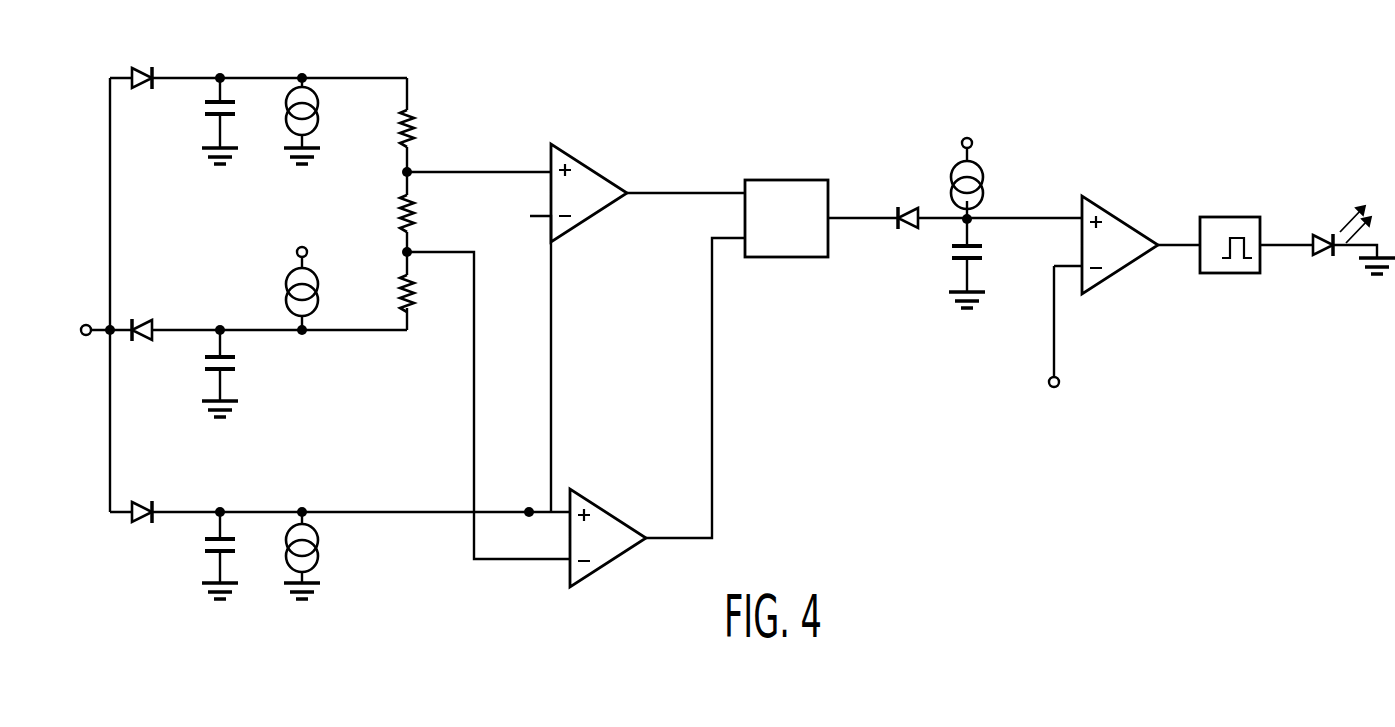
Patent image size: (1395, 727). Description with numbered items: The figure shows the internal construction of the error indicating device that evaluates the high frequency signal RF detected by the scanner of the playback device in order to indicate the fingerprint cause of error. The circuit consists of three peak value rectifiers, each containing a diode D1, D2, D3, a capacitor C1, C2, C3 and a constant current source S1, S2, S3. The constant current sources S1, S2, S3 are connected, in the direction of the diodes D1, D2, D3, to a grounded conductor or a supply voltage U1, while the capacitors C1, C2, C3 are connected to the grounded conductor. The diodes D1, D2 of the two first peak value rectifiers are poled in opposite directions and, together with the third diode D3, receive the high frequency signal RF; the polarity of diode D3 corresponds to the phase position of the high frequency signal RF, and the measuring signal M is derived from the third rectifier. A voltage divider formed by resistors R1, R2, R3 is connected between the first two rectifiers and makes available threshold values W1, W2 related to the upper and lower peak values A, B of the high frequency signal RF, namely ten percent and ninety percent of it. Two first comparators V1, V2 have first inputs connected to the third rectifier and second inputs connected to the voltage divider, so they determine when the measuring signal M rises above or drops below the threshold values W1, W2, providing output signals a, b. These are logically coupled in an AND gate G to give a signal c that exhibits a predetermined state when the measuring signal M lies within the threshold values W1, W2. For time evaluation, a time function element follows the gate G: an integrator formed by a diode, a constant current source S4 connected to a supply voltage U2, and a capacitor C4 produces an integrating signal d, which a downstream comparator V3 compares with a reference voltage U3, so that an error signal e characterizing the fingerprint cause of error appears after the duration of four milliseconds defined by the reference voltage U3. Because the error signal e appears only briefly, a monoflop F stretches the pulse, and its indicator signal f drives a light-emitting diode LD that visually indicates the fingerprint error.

The high frequency signal RF is at (70, 331).
The diode D1 is at (141, 62).
The diode D2 is at (524, 259).
The diode D3 is at (141, 496).
The capacitor C1 is at (205, 121).
The capacitor C2 is at (205, 373).
The capacitor C3 is at (205, 555).
The capacitor C4 is at (980, 263).
The constant current source S1 is at (315, 121).
The constant current source S2 is at (314, 293).
The constant current source S3 is at (313, 555).
The constant current source S4 is at (980, 190).
The resistor R1 is at (421, 128).
The resistor R2 is at (421, 213).
The resistor R3 is at (424, 292).
The supply voltage U1 is at (298, 236).
The supply voltage U2 is at (966, 135).
The reference voltage U3 is at (1053, 401).
The first comparator V1 is at (584, 158).
The first comparator V2 is at (608, 534).
The comparator V3 is at (1115, 212).
The AND gate G is at (778, 178).
The monoflop F is at (1222, 216).
The light-emitting diode LD is at (1354, 249).
The upper peak value A is at (420, 74).
The lower peak value B is at (420, 337).
The measuring signal M is at (419, 534).
The threshold value W1 is at (378, 171).
The threshold value W2 is at (375, 254).
The output signal a is at (672, 177).
The output signal b is at (691, 522).
The signal c is at (850, 204).
The integrating signal d is at (1067, 205).
The error signal e is at (1179, 229).
The indicator signal f is at (1276, 230).